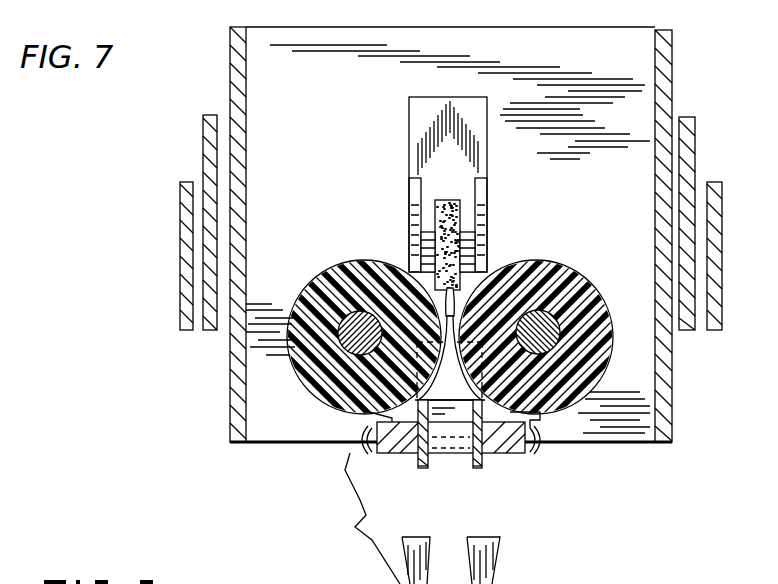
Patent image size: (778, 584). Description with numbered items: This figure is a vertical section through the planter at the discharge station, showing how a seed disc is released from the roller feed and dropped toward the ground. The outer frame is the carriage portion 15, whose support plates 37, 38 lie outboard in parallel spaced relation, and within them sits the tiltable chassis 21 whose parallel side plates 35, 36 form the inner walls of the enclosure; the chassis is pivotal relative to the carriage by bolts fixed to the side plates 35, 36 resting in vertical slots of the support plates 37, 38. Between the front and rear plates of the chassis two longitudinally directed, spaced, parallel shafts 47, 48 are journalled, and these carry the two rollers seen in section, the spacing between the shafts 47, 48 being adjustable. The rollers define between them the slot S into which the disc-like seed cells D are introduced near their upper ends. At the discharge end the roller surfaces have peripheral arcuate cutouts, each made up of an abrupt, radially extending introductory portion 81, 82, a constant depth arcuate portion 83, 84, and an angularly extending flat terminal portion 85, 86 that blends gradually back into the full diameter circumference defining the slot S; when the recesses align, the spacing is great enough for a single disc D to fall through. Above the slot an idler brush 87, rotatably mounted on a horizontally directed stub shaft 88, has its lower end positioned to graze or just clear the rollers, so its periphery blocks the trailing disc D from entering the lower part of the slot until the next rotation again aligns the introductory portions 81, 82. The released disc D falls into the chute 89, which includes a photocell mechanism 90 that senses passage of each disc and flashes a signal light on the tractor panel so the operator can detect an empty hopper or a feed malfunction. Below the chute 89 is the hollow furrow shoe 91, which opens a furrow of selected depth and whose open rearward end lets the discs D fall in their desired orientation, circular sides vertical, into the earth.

The carriage portion 15 is at (178, 250).
The chassis 21 is at (228, 422).
The side plate 35 is at (236, 86).
The side plate 36 is at (662, 78).
The support plate 37 is at (203, 143).
The support plate 38 is at (688, 139).
The shaft 47 is at (345, 316).
The shaft 48 is at (541, 326).
The introductory portion 81 is at (366, 412).
The introductory portion 82 is at (540, 414).
The constant depth arcuate portion 83 is at (365, 338).
The constant depth arcuate portion 84 is at (535, 338).
The flat terminal portion 85 is at (376, 266).
The flat terminal portion 86 is at (540, 262).
The idler brush 87 is at (447, 200).
The stub shaft 88 is at (470, 240).
The chute 89 is at (425, 468).
The photocell mechanism 90 is at (508, 468).
The furrow shoe 91 is at (494, 576).
The disc-like seed cells D is at (445, 268).
The slot S is at (451, 434).